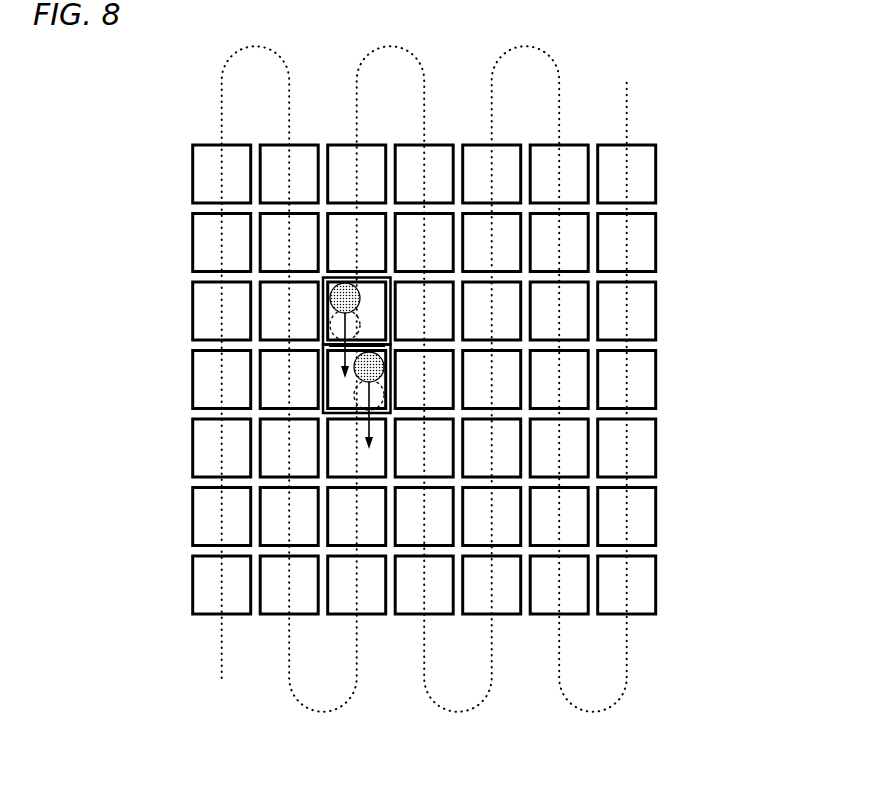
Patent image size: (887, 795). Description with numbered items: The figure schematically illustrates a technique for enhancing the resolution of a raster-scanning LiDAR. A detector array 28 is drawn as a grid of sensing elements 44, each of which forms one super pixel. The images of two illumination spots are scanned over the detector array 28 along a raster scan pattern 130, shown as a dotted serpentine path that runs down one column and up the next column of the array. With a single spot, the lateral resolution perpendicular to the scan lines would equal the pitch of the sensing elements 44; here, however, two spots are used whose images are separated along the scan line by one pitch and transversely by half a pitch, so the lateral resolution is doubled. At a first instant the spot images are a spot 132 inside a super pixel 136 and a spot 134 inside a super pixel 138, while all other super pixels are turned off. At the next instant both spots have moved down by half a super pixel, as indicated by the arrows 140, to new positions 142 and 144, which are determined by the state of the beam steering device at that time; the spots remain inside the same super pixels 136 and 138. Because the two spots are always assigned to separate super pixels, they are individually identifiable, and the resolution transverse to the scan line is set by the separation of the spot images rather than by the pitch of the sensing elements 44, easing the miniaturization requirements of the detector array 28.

The detector array 28 is at (148, 145).
The sensing elements 44 is at (657, 173).
The raster scan pattern 130 is at (560, 51).
The spot 132 is at (362, 301).
The spot 134 is at (385, 360).
The super pixel 136 is at (322, 303).
The super pixel 138 is at (322, 392).
The arrows 140 is at (343, 365).
The new position 142 is at (385, 332).
The new position 144 is at (385, 390).